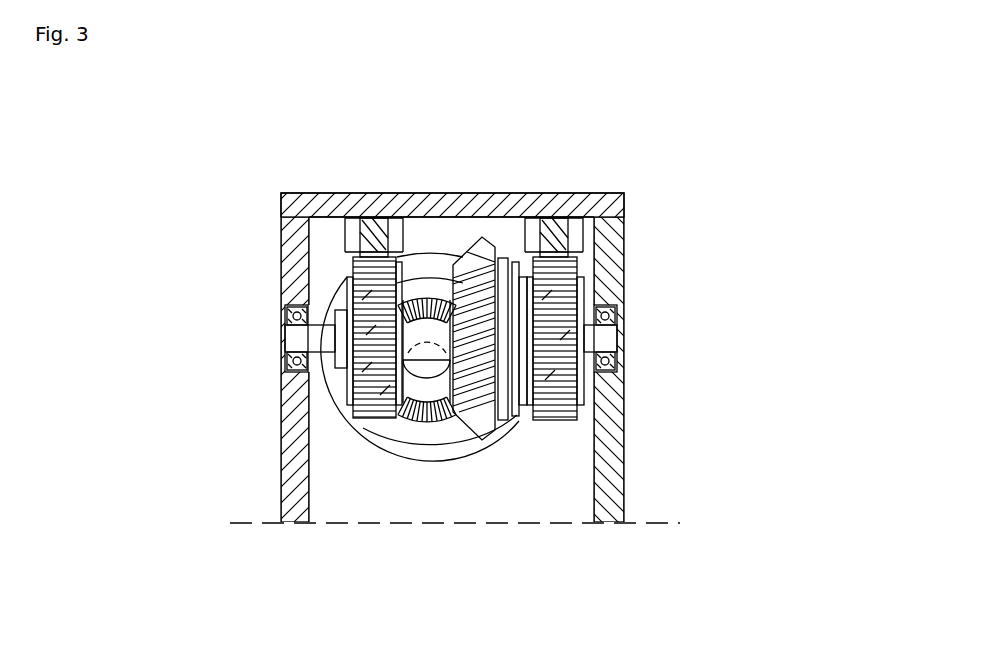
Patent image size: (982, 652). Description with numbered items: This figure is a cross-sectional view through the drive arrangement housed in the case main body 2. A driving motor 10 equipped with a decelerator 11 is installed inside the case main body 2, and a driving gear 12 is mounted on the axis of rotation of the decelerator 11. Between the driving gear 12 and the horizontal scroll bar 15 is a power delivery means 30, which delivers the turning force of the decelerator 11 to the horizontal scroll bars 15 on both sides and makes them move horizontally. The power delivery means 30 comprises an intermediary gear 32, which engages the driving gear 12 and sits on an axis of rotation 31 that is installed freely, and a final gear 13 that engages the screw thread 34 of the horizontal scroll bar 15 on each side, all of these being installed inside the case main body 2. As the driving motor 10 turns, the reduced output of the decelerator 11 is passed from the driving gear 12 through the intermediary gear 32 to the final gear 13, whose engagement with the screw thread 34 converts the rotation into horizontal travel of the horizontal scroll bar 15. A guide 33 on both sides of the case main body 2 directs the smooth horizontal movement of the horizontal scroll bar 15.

The case main body 2 is at (283, 277).
The driving motor 10 is at (443, 455).
The decelerator 11 is at (397, 432).
The driving gear 12 is at (423, 425).
The final gear 13 is at (355, 380).
The horizontal scroll bar 15 is at (553, 237).
The power delivery means 30 is at (530, 437).
The axis of rotation 31 is at (613, 340).
The intermediary gear 32 is at (493, 420).
The guide 33 is at (347, 241).
The screw thread 34 is at (585, 277).